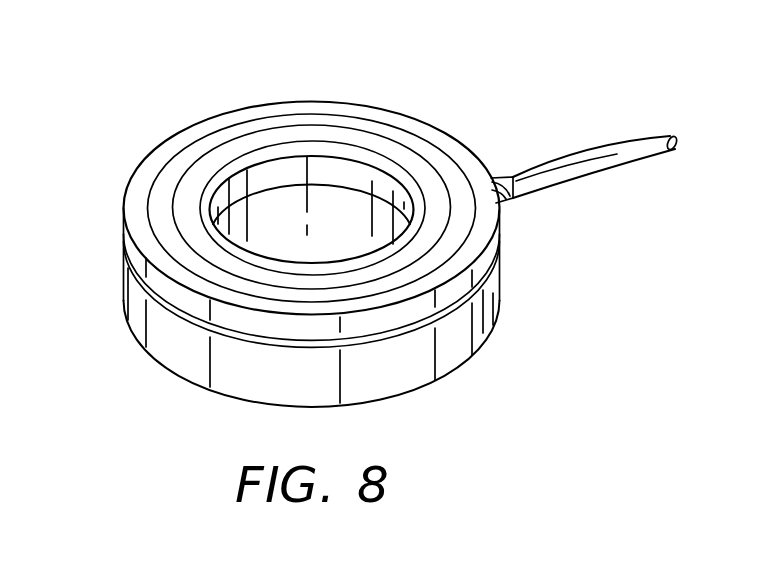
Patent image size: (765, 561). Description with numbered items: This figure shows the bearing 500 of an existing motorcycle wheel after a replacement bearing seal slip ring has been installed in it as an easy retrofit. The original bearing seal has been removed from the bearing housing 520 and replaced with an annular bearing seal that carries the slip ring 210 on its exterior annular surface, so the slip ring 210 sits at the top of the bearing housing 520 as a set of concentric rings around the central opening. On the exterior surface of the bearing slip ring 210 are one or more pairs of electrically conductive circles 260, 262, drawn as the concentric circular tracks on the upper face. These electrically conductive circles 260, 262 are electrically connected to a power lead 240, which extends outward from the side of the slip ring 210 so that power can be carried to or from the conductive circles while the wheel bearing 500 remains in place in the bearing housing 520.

The bearing 500 is at (110, 192).
The bearing seal slip ring 210 is at (340, 97).
The electrically conductive circle 262 is at (388, 143).
The electrically conductive circle 260 is at (437, 145).
The power lead 240 is at (617, 152).
The bearing housing 520 is at (478, 314).